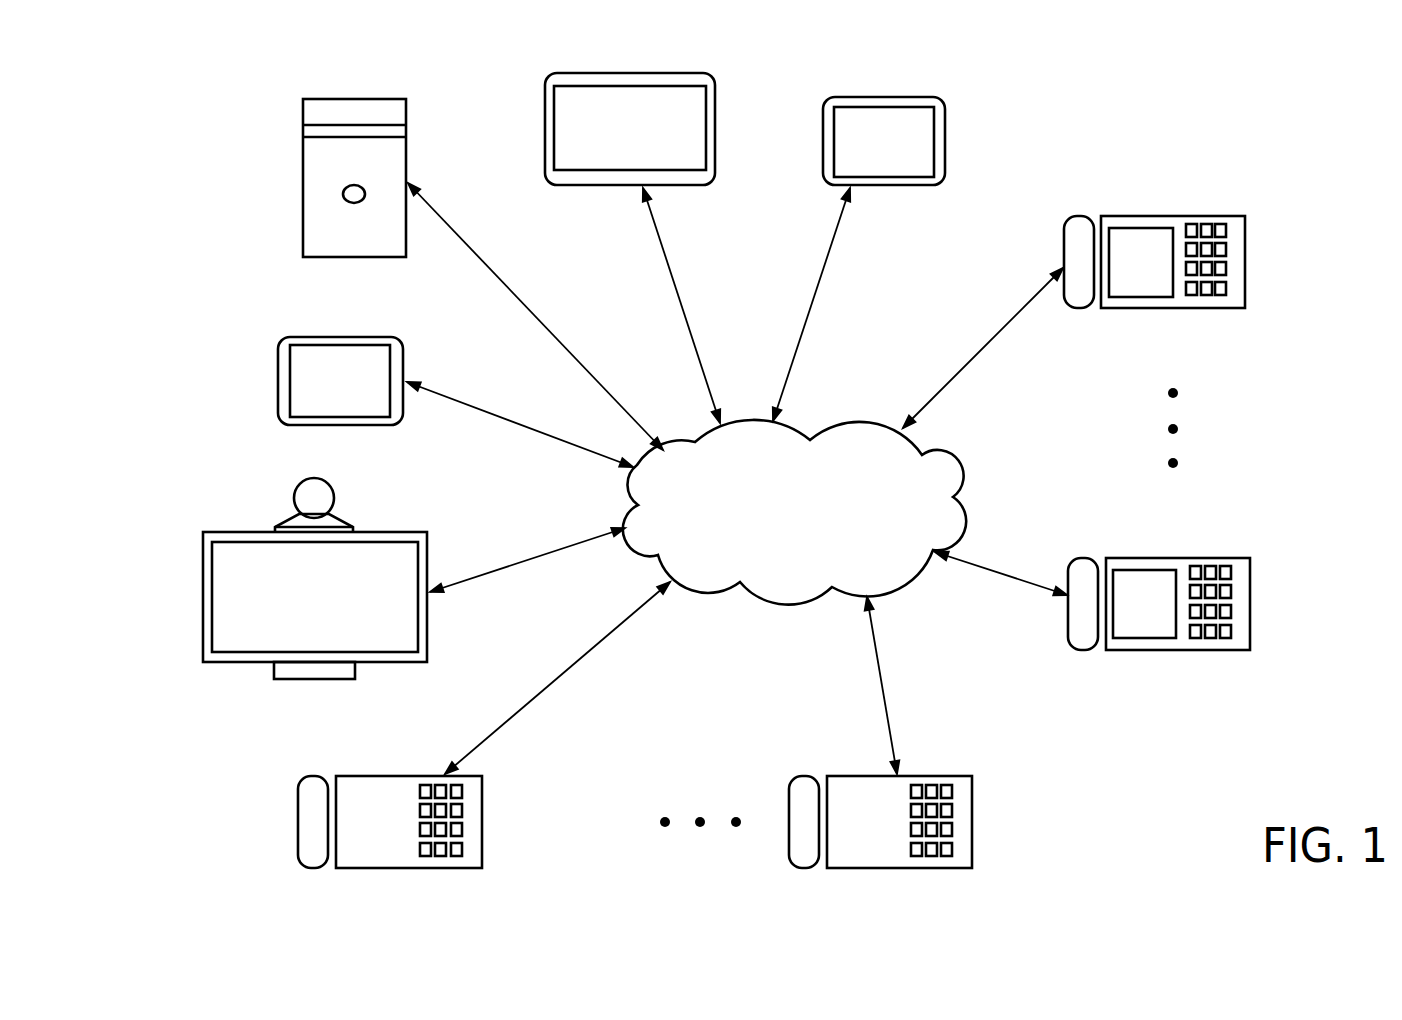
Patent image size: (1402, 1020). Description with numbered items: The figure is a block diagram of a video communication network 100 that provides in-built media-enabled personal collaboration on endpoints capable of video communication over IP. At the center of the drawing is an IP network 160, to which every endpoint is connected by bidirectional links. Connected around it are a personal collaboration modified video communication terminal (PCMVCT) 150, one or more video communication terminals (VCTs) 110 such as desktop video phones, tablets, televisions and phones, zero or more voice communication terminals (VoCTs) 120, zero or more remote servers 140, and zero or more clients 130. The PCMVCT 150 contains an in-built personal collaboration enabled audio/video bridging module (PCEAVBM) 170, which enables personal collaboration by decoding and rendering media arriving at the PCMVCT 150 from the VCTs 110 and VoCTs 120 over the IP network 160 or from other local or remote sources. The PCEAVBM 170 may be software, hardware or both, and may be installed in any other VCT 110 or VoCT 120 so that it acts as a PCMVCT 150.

The video communication network 100 is at (1347, 115).
The video communication terminal (VCT) 110 is at (945, 138).
The voice communication terminal (VoCT) 120 is at (298, 822).
The client 130 is at (594, 186).
The remote server 140 is at (303, 170).
The personal collaboration modified video communication terminal (PCMVCT) 150 is at (260, 395).
The IP network 160 is at (816, 539).
The personal collaboration enabled audio/video bridging module (PCEAVBM) 170 is at (290, 349).